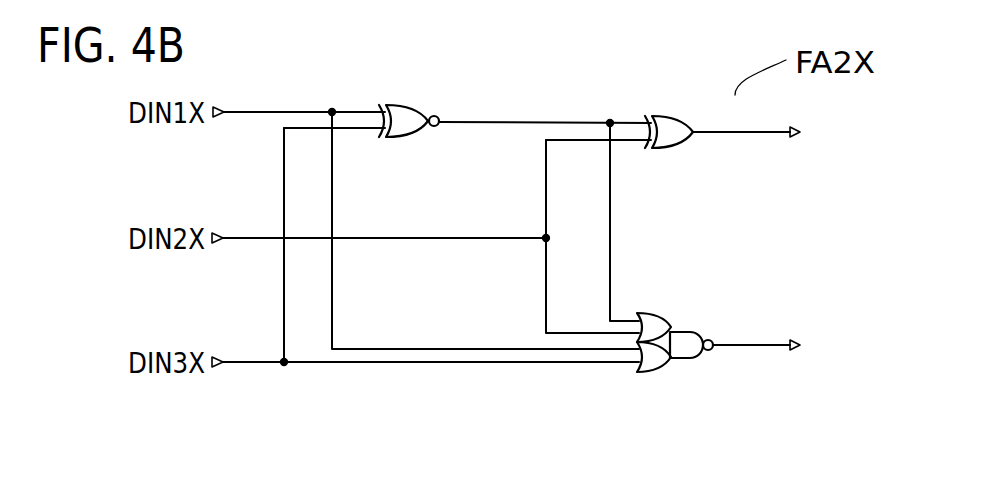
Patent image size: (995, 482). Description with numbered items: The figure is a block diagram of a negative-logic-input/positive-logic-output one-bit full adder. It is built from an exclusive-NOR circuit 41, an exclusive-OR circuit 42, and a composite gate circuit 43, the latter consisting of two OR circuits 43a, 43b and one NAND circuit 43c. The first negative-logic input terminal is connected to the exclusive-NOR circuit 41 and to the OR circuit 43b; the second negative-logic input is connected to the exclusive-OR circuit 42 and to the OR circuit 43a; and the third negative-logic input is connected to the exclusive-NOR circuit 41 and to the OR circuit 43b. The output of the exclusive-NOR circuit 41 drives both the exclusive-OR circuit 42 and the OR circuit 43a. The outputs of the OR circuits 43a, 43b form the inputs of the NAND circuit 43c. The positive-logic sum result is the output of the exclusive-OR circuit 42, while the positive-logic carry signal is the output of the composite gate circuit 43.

The exclusive-NOR circuit 41 is at (405, 104).
The exclusive-OR circuit 42 is at (657, 114).
The composite gate circuit 43 is at (748, 345).
The OR circuit 43a is at (651, 311).
The OR circuit 43b is at (648, 374).
The NAND circuit 43c is at (690, 360).